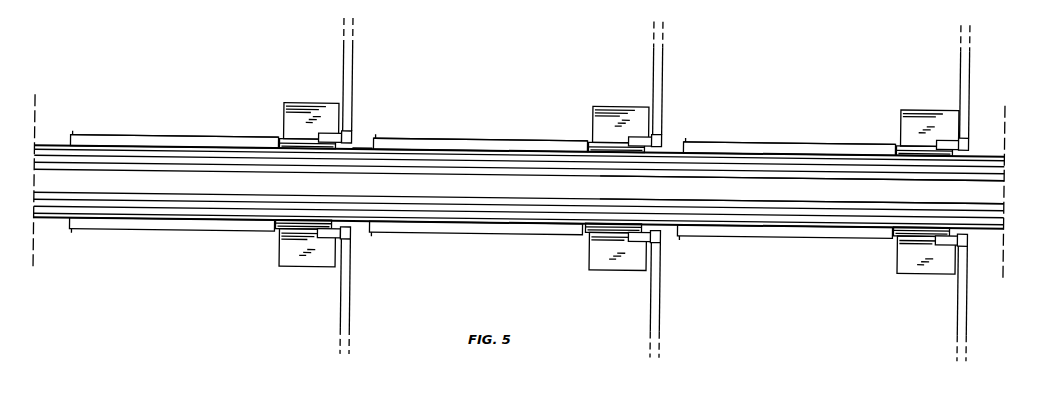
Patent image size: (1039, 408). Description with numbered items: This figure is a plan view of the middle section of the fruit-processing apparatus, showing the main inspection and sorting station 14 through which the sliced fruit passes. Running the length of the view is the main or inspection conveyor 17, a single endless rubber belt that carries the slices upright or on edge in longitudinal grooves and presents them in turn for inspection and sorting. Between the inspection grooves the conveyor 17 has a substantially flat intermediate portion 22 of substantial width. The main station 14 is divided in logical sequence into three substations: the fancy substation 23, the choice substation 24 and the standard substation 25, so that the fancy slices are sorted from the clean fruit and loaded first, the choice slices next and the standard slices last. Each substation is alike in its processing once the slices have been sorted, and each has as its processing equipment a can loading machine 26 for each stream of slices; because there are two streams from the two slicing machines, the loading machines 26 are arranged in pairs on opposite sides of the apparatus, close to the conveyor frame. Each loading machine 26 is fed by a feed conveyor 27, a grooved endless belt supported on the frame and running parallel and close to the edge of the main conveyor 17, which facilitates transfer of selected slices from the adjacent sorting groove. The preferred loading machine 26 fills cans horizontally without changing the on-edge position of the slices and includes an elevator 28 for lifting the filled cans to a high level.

The main inspection and sorting station 14 is at (360, 140).
The main or inspection conveyor 17 is at (495, 194).
The flat intermediate portion of the conveyor 22 is at (687, 194).
The fancy substation 23 is at (179, 134).
The choice substation 24 is at (481, 140).
The standard substation 25 is at (788, 143).
The can loading machine 26 is at (304, 104).
The feed conveyor 27 is at (229, 134).
The elevator 28 is at (352, 49).